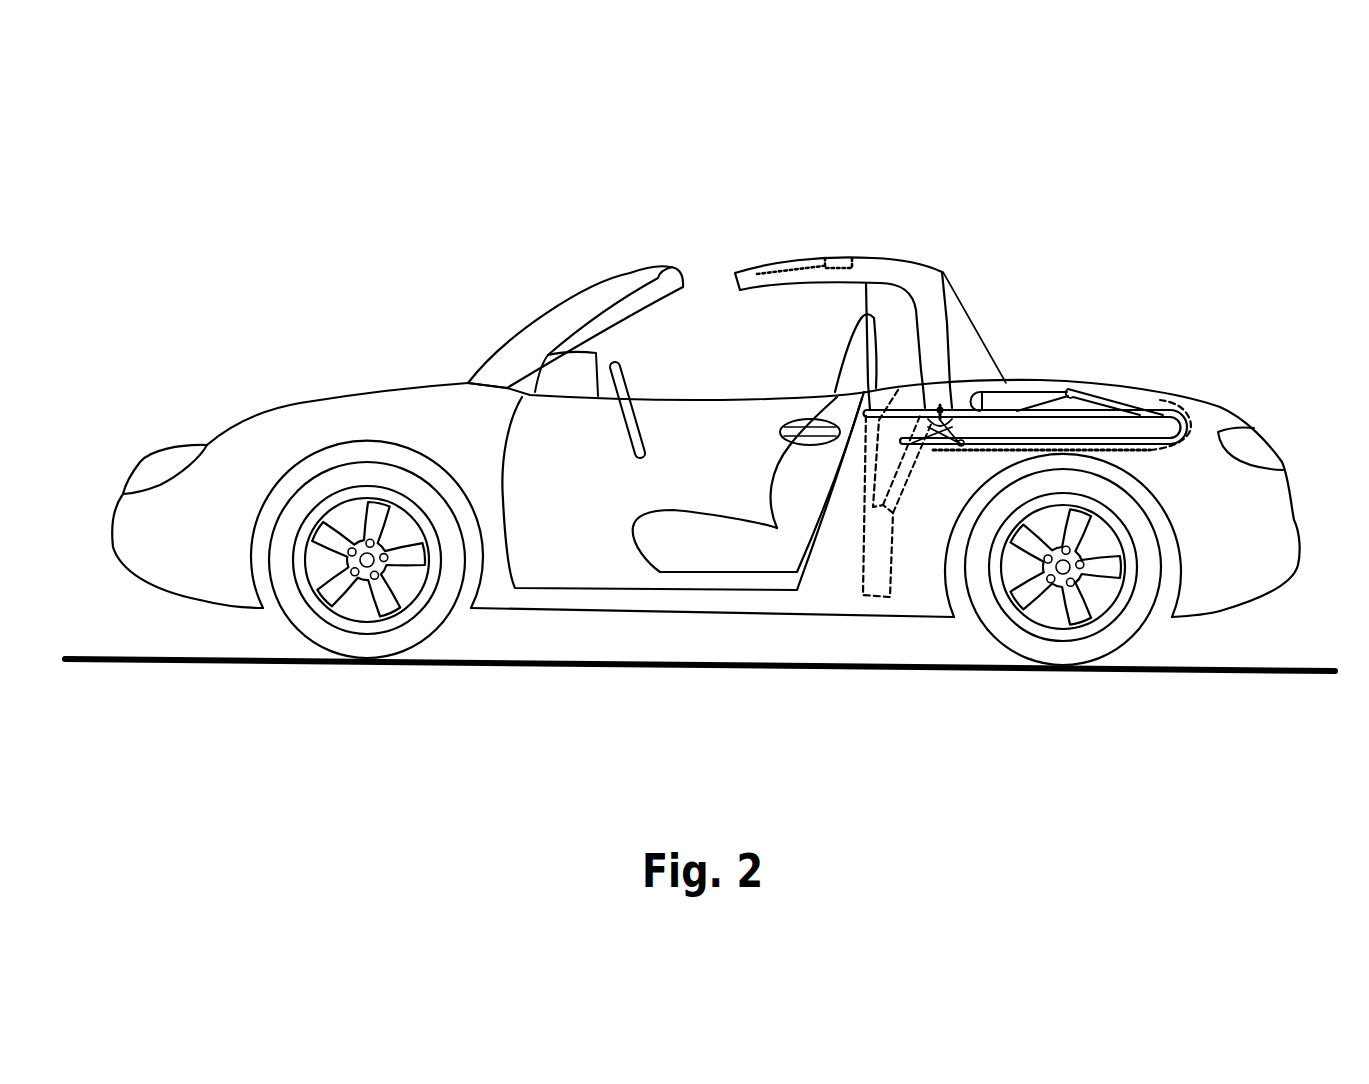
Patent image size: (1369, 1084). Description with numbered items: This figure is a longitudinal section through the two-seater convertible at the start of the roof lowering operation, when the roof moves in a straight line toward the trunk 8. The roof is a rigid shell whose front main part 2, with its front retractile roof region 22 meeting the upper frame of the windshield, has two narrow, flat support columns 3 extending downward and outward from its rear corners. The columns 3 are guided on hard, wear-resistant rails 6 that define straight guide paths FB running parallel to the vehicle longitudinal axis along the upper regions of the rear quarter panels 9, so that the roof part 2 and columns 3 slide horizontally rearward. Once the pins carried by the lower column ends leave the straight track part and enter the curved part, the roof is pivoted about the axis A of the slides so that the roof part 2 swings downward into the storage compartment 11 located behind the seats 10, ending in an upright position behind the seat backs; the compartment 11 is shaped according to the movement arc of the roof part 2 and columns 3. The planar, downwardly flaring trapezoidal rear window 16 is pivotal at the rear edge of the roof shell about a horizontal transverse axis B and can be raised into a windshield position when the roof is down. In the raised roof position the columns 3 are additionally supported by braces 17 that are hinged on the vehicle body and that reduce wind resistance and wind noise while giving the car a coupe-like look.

The front main part 2 is at (874, 271).
The front retractile roof region 22 is at (806, 263).
The support columns 3 is at (929, 338).
The pivot axis of rear window B is at (942, 272).
The rear window 16 is at (976, 322).
The braces 17 is at (1047, 400).
The straight guide path FB is at (1017, 404).
The rails 6 is at (1128, 418).
The rear quarter panel 9 is at (1133, 386).
The trunk 8 is at (1197, 495).
The pivot axis of guide slides A is at (936, 448).
The seats 10 is at (781, 451).
The storage compartment 11 is at (877, 540).